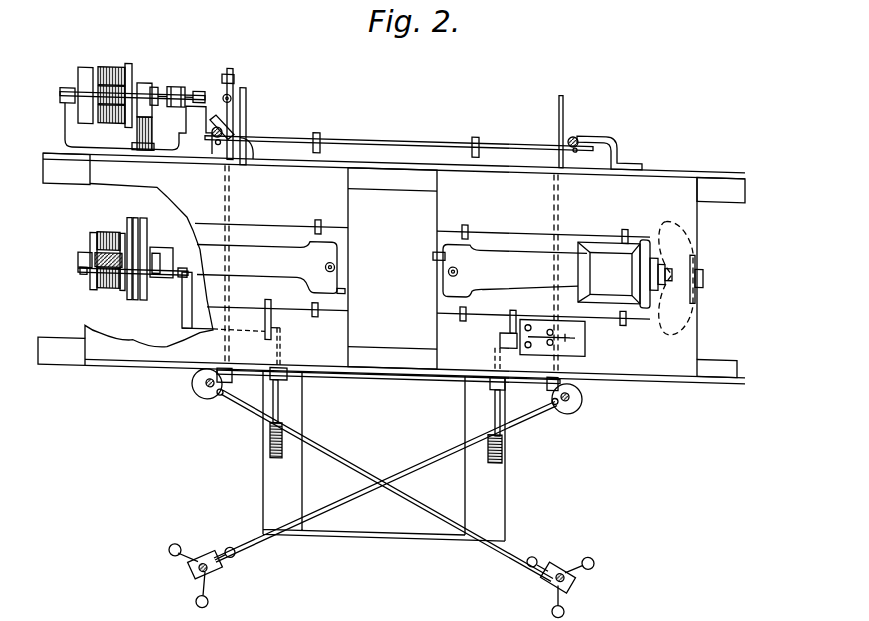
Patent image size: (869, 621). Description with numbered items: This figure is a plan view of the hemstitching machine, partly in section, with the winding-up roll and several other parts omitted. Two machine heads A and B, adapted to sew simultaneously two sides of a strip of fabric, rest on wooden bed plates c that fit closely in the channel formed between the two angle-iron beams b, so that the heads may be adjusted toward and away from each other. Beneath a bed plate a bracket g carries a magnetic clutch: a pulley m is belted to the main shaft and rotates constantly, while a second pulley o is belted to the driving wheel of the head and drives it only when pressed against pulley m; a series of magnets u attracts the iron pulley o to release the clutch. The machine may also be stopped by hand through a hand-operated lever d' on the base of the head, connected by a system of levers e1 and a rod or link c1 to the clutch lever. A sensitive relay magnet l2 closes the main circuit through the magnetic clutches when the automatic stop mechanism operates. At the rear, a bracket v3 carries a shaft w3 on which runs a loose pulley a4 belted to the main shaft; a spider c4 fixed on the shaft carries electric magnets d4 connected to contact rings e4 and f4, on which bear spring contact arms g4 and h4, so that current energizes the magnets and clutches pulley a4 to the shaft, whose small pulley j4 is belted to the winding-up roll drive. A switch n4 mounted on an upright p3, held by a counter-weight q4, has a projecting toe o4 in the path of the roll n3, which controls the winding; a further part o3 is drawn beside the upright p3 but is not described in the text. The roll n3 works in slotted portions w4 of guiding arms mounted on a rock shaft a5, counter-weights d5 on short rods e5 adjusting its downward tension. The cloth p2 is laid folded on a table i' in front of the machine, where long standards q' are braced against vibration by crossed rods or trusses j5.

The shaft w3 is at (60, 92).
The bracket v3 is at (65, 128).
The loose pulley a4 is at (105, 105).
The electric magnets d4 is at (120, 66).
The spider c4 is at (143, 79).
The spring contact arm h4 is at (146, 120).
The spring contact arm g4 is at (137, 118).
The contact ring e4 is at (156, 84).
The contact ring f4 is at (181, 82).
The small pulley j4 is at (234, 70).
The slotted portion w4 is at (559, 107).
The counter-weight q4 is at (234, 74).
The switch n4 is at (233, 90).
The roll n3 is at (292, 130).
The upright p3 is at (575, 121).
The pin o3 is at (575, 136).
The projecting toe o4 is at (253, 152).
The magnets u is at (100, 229).
The bracket g is at (97, 280).
The pulley m is at (144, 223).
The pulley o is at (128, 297).
The rod or link c1 is at (165, 274).
The system of levers e1 is at (182, 306).
The machine head A is at (271, 266).
The machine head B is at (510, 272).
The hand-operated lever d' is at (391, 335).
The relay magnet l2 is at (533, 340).
The short rods e5 is at (278, 360).
The rock shaft a5 is at (327, 368).
The counter-weights d5 is at (271, 433).
The cloth p2 is at (384, 455).
The table or support i' is at (492, 458).
The crossed rods or trusses j5 is at (440, 497).
The standards q' is at (372, 580).
The bed plate c is at (380, 268).
The beams b is at (747, 347).